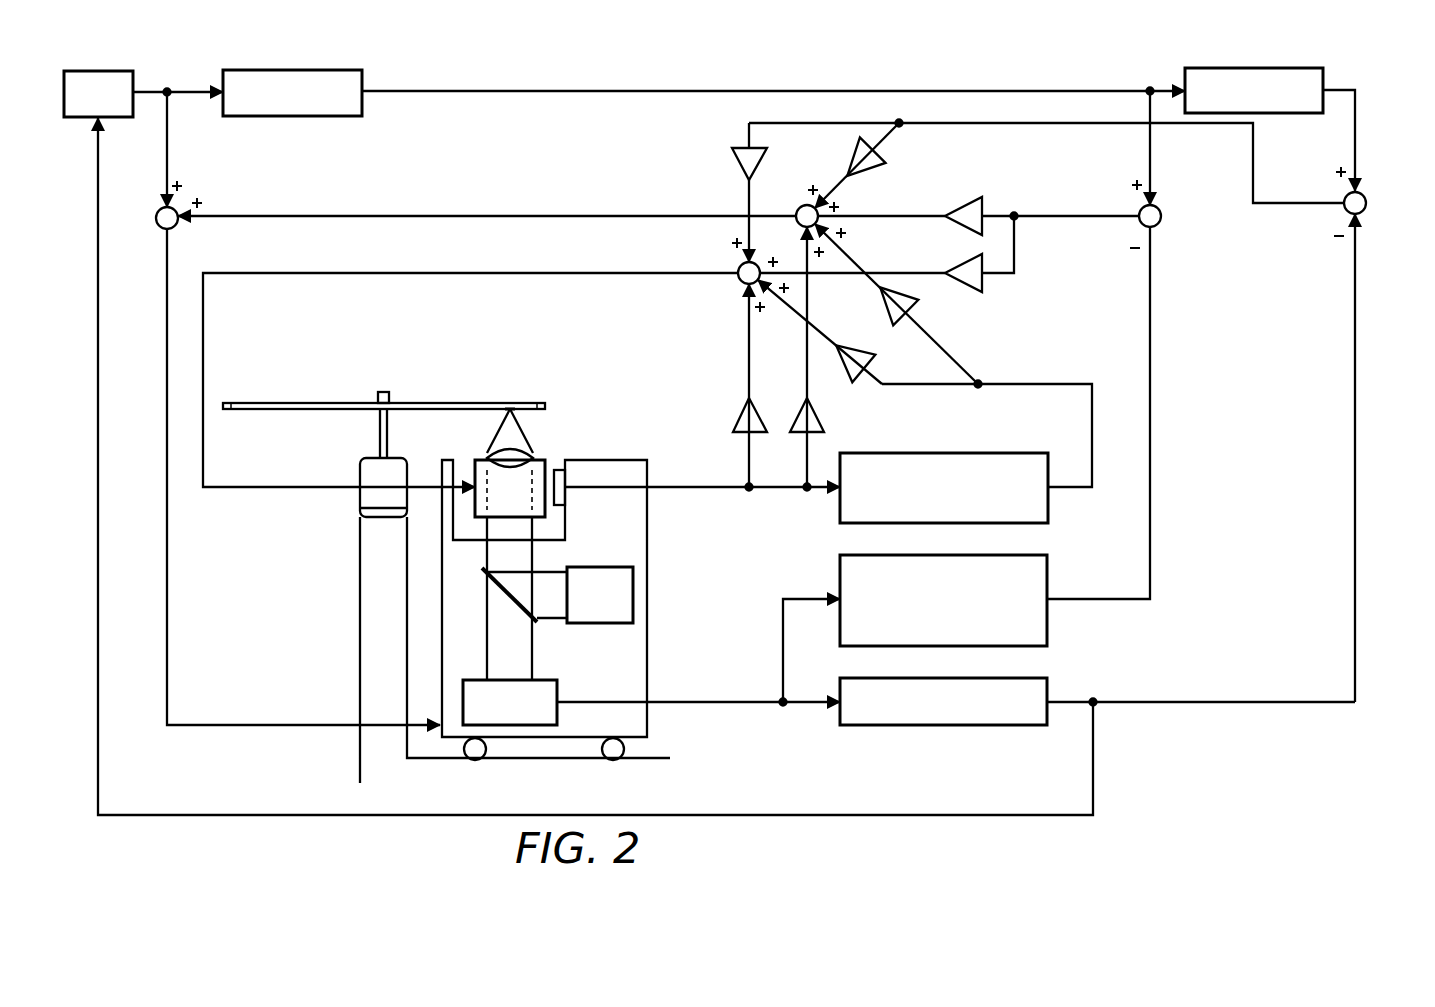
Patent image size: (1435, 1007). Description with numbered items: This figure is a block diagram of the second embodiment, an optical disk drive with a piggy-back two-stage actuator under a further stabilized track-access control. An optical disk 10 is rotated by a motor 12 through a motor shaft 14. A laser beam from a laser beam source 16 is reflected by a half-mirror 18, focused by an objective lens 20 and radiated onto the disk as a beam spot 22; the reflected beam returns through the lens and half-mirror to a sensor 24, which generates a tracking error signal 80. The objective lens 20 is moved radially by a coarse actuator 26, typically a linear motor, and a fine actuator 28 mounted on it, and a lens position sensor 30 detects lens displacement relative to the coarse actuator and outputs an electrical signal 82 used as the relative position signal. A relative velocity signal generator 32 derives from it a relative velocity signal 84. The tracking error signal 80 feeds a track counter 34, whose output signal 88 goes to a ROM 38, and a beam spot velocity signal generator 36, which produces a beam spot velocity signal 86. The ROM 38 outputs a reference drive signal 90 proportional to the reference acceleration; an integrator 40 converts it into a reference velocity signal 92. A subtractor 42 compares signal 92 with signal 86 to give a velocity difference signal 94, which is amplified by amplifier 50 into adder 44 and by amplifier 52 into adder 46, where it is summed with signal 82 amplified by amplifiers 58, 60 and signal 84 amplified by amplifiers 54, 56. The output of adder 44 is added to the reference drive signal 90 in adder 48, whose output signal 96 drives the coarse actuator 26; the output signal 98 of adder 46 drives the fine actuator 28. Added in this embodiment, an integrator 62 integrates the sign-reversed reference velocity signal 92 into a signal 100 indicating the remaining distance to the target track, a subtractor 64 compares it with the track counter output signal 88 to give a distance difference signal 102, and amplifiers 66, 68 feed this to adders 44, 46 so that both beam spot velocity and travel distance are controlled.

The optical disk 10 is at (470, 402).
The motor 12 is at (360, 472).
The motor shaft 14 is at (383, 391).
The laser beam source 16 is at (592, 566).
The half-mirror 18 is at (512, 600).
The objective lens 20 is at (495, 433).
The beam spot 22 is at (515, 411).
The sensor 24 is at (557, 686).
The coarse actuator 26 is at (647, 637).
The fine actuator 28 is at (523, 504).
The lens position sensor 30 is at (565, 478).
The relative velocity signal generator 32 is at (940, 452).
The track counter 34 is at (935, 726).
The beam spot velocity signal generator 36 is at (1047, 622).
The ROM 38 is at (76, 118).
The integrator 40 is at (362, 80).
The subtractor 42 is at (1161, 219).
The adder 44 is at (800, 207).
The adder 46 is at (740, 265).
The adder 48 is at (158, 226).
The amplifier 50 is at (982, 202).
The amplifier 52 is at (982, 280).
The amplifier 54 is at (916, 305).
The amplifier 56 is at (845, 342).
The amplifier 58 is at (824, 422).
The amplifier 60 is at (733, 418).
The integrator 62 is at (1323, 76).
The subtractor 64 is at (1366, 206).
The amplifier 66 is at (880, 160).
The amplifier 68 is at (732, 162).
The tracking error signal 80 is at (745, 704).
The electrical signal 82 is at (730, 489).
The relative velocity signal 84 is at (1060, 382).
The beam spot velocity signal 86 is at (1070, 597).
The output signal 88 is at (1025, 813).
The reference drive signal 90 is at (167, 90).
The reference velocity signal 92 is at (653, 89).
The velocity difference signal 94 is at (1068, 218).
The output signal 96 is at (167, 580).
The output signal 98 is at (222, 489).
The signal 100 is at (1355, 122).
The distance difference signal 102 is at (1285, 205).